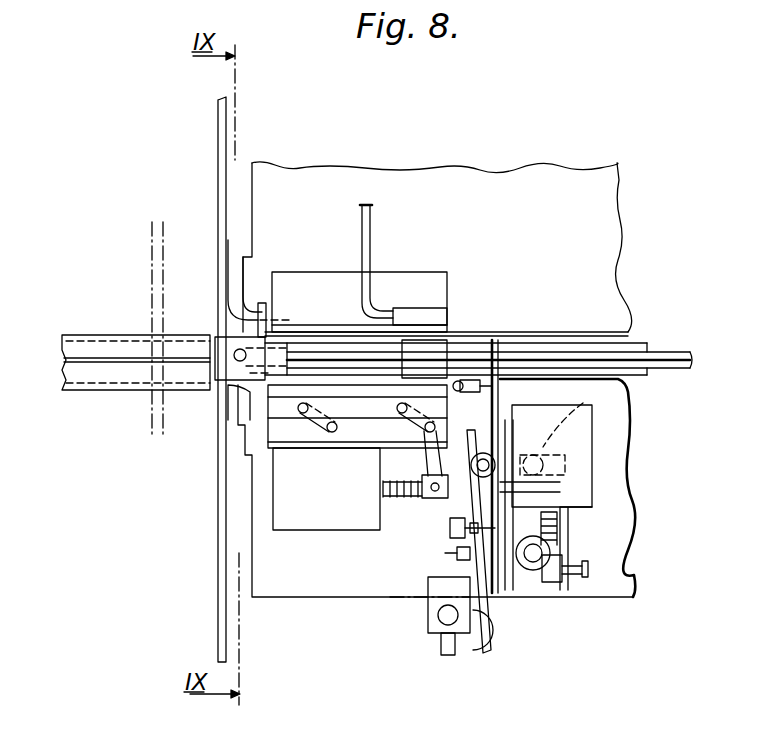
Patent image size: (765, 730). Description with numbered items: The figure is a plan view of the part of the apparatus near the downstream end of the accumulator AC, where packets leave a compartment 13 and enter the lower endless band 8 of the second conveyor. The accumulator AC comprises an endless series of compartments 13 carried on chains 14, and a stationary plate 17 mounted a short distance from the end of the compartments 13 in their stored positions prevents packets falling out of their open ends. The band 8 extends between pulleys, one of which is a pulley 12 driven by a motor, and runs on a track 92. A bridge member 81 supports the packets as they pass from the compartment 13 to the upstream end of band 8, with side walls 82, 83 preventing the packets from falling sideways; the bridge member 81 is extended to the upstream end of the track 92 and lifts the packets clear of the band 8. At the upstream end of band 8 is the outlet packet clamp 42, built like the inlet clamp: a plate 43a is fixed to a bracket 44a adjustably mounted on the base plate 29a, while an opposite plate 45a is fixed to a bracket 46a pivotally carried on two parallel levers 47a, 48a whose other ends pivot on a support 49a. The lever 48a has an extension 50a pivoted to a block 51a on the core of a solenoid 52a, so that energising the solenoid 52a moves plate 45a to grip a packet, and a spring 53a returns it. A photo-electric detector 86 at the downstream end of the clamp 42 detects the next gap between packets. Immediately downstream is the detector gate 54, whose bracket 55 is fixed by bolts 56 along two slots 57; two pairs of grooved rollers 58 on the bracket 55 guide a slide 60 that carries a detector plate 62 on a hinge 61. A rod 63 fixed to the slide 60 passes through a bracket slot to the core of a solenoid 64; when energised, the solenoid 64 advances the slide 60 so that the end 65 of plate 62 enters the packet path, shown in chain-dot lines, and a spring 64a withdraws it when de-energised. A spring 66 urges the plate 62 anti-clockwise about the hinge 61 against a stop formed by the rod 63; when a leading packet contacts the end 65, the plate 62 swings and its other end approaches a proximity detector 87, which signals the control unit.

The lower endless band 8 is at (668, 352).
The pulley 12 is at (270, 316).
The compartment 13 is at (82, 387).
The chain 14 is at (150, 308).
The stationary plate 17 is at (217, 149).
The base plate 29a is at (276, 596).
The outlet packet clamp 42 is at (252, 423).
The plate 43a is at (315, 328).
The bracket 44a is at (398, 283).
The plate 45a is at (298, 412).
The bracket 46a is at (330, 434).
The lever 47a is at (325, 412).
The lever 48a is at (406, 385).
The support 49a is at (343, 400).
The extension 50a is at (386, 479).
The block 51a is at (425, 500).
The solenoid 52a is at (318, 521).
The spring 53a is at (420, 480).
The detector gate 54 is at (555, 541).
The bracket 55 is at (527, 592).
The bolt 56 is at (600, 408).
The slot 57 is at (600, 433).
The grooved roller 58 is at (506, 405).
The slide 60 is at (520, 500).
The hinge 61 is at (510, 445).
The detector plate 62 is at (455, 553).
The rod 63 is at (578, 586).
The solenoid 64 is at (592, 463).
The spring 64a is at (604, 517).
The end of detector plate 65 is at (462, 380).
The spring 66 is at (450, 531).
The bridge member 81 is at (216, 370).
The side wall 82 is at (257, 302).
The side wall 83 is at (249, 393).
The photo-electric detector 86 is at (446, 302).
The proximity detector 87 is at (446, 621).
The track 92 is at (455, 345).
The accumulator AC is at (178, 318).